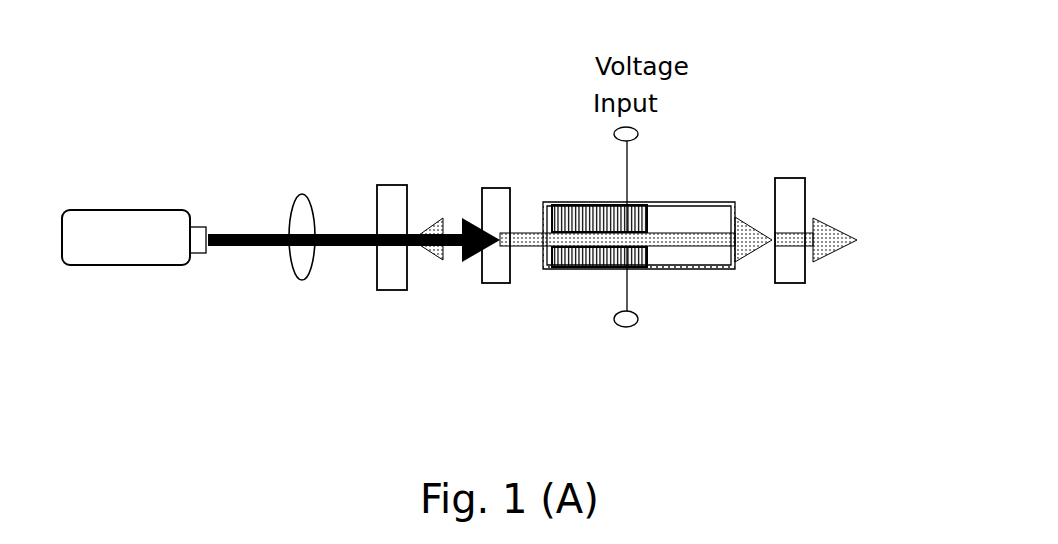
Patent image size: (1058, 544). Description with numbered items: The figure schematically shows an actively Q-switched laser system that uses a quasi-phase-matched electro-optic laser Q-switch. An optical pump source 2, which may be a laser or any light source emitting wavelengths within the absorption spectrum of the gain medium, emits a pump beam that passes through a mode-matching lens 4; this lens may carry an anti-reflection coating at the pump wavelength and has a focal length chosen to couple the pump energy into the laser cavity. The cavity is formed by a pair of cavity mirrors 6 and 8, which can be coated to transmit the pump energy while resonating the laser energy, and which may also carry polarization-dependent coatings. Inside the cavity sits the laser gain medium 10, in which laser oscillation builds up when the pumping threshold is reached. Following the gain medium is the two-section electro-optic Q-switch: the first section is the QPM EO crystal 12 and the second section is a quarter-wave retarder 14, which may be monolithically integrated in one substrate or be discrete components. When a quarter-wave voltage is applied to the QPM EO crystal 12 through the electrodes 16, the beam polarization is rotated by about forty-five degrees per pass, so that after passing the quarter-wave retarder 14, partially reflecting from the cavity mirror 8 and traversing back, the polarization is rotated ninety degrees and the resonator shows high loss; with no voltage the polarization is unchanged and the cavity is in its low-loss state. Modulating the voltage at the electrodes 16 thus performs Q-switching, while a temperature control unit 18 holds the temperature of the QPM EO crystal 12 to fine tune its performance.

The optical pump source 2 is at (145, 193).
The mode-matching lens 4 is at (298, 193).
The cavity mirror 6 is at (387, 293).
The cavity mirror 8 is at (793, 293).
The laser gain medium 10 is at (487, 175).
The QPM EO crystal 12 is at (587, 223).
The quarter-wave retarder 14 is at (677, 227).
The electrodes 16 is at (572, 267).
The temperature control unit 18 is at (667, 268).